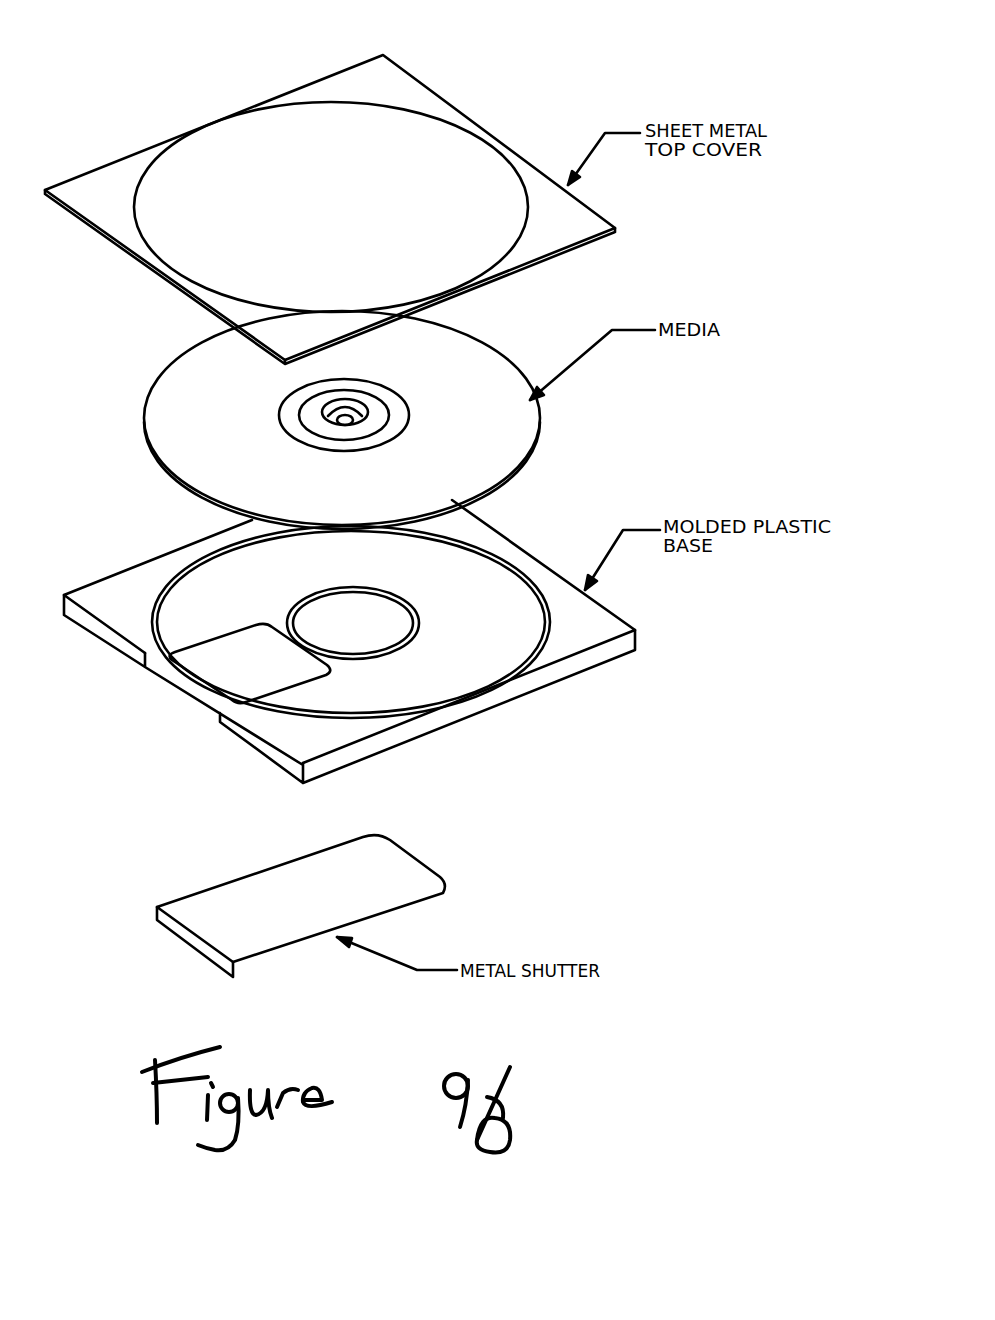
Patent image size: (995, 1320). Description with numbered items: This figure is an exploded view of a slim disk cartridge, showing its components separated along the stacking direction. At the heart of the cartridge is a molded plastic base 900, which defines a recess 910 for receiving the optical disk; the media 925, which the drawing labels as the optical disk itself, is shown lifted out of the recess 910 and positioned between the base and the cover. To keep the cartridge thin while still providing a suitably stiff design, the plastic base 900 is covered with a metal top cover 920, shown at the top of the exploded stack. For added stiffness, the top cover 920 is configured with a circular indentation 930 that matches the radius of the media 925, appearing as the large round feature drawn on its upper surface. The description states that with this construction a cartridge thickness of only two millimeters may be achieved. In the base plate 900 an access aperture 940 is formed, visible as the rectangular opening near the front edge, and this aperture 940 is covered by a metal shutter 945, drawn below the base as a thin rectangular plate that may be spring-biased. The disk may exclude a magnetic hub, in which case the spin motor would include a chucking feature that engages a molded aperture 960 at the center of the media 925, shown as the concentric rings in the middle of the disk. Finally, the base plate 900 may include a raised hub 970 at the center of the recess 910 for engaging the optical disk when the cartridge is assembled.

The plastic base 900 is at (617, 653).
The recess 910 is at (478, 652).
The metal top cover 920 is at (390, 82).
The media disc 925 is at (497, 415).
The indentation 930 is at (190, 152).
The access aperture 940 is at (223, 665).
The metal shutter 945 is at (433, 915).
The molded aperture 960 is at (388, 344).
The raised hub 970 is at (410, 598).